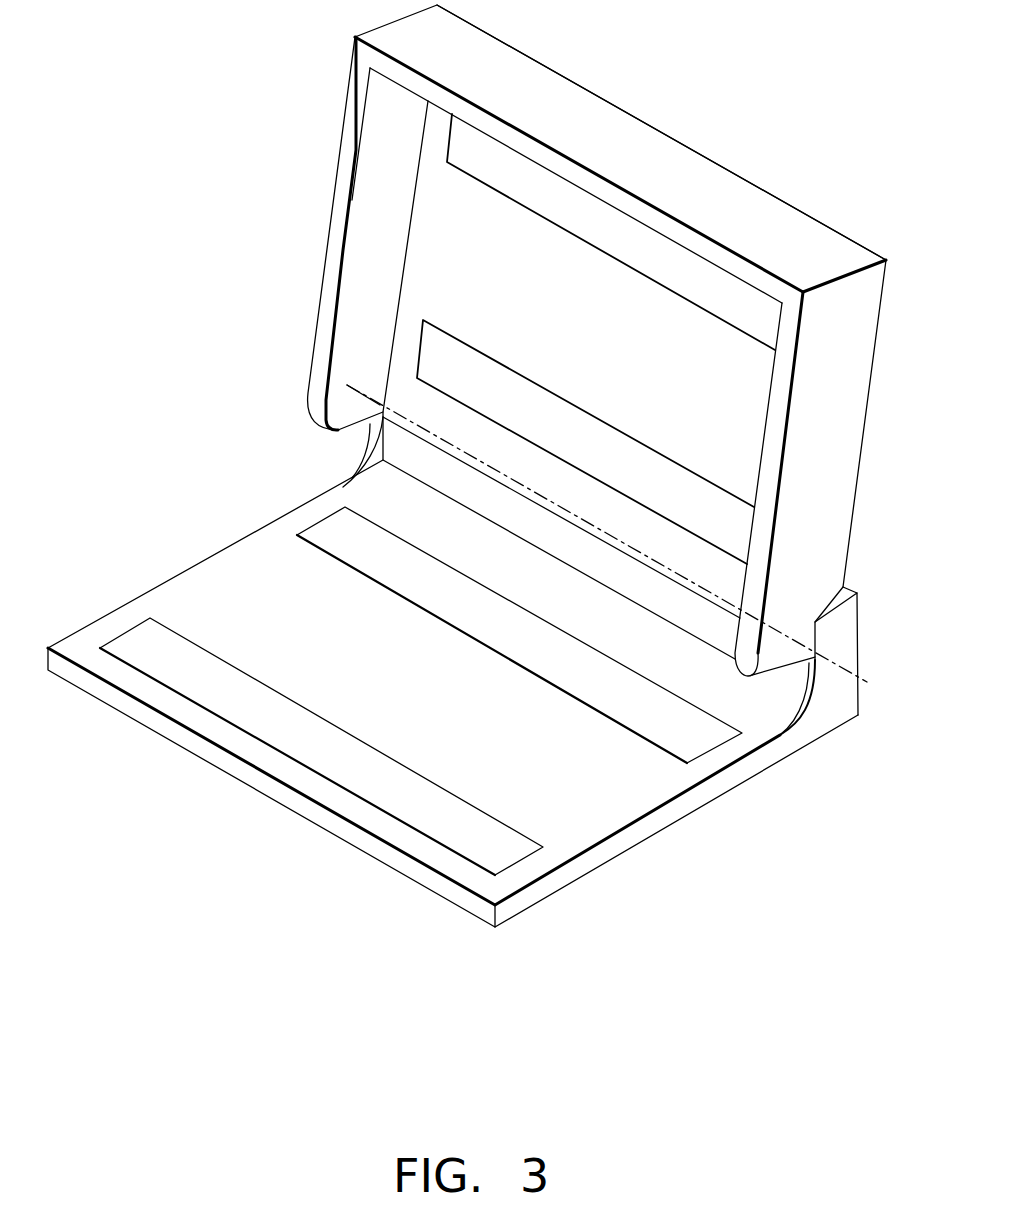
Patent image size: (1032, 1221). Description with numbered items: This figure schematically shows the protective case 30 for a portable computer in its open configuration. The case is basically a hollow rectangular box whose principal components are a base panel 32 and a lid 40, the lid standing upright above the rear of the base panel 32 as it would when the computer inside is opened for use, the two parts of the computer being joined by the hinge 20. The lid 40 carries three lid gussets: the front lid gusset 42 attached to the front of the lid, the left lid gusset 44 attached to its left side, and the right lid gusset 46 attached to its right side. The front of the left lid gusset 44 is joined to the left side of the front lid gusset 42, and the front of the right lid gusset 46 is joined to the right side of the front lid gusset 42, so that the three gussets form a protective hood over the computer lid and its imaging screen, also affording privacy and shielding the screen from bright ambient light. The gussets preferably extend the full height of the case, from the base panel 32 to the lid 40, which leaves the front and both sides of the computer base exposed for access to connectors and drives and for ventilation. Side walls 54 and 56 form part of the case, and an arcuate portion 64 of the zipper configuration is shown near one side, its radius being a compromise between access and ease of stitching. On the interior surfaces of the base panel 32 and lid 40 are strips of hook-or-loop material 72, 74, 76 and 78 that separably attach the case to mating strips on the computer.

The hinge 20 is at (860, 683).
The protective case 30 is at (855, 566).
The base panel 32 is at (298, 800).
The lid 40 is at (699, 201).
The front lid gusset 42 is at (358, 254).
The left lid gusset 44 is at (626, 152).
The right lid gusset 46 is at (843, 445).
The side wall 54 is at (372, 468).
The side wall 56 is at (835, 703).
The arcuate portion of the zipper configuration 64 is at (802, 718).
The separable attaching means 72 is at (386, 755).
The separable attaching means 74 is at (641, 718).
The separable attaching means 76 is at (442, 350).
The separable attaching means 78 is at (505, 186).